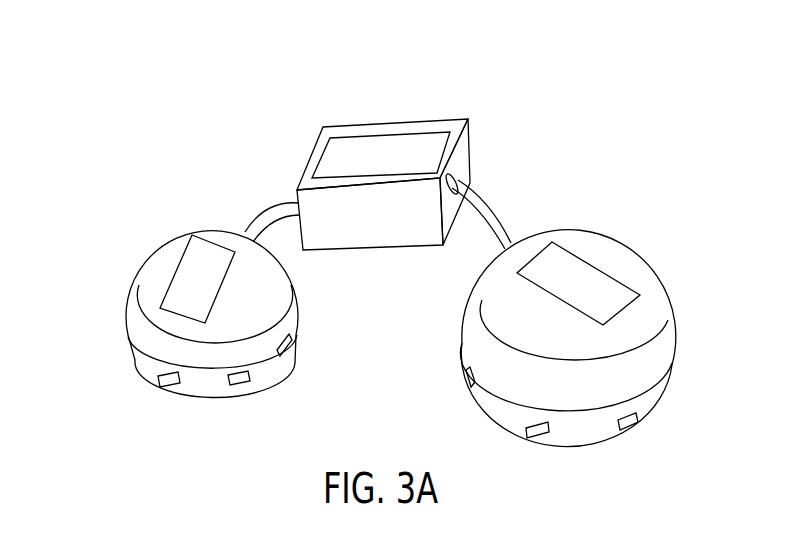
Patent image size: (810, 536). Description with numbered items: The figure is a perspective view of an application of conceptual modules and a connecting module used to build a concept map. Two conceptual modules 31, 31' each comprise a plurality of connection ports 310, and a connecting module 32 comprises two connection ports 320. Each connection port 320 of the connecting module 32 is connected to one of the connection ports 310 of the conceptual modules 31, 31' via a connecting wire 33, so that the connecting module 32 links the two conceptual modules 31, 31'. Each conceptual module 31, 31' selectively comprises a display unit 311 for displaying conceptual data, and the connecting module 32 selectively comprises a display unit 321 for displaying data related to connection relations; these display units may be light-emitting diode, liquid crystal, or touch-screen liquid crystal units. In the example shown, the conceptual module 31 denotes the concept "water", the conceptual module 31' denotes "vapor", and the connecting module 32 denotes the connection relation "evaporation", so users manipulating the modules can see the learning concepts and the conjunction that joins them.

The conceptual module 31 is at (191, 297).
The conceptual module 31' is at (579, 313).
The display unit 311 is at (178, 298).
The connection port 310 is at (238, 381).
The connecting module 32 is at (337, 130).
The display unit 321 is at (410, 143).
The connection port 320 is at (455, 182).
The connecting wire 33 is at (263, 216).